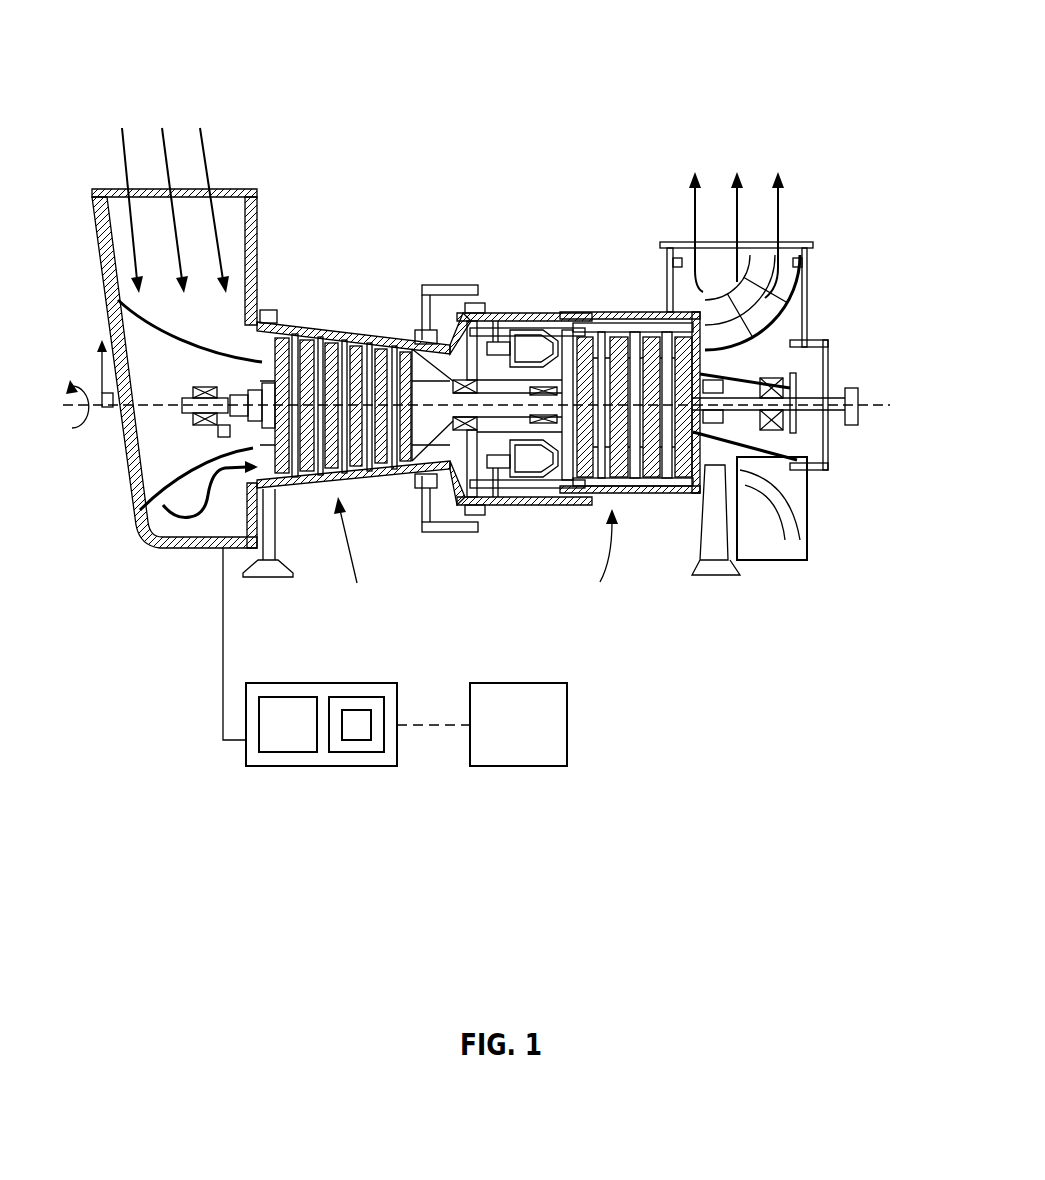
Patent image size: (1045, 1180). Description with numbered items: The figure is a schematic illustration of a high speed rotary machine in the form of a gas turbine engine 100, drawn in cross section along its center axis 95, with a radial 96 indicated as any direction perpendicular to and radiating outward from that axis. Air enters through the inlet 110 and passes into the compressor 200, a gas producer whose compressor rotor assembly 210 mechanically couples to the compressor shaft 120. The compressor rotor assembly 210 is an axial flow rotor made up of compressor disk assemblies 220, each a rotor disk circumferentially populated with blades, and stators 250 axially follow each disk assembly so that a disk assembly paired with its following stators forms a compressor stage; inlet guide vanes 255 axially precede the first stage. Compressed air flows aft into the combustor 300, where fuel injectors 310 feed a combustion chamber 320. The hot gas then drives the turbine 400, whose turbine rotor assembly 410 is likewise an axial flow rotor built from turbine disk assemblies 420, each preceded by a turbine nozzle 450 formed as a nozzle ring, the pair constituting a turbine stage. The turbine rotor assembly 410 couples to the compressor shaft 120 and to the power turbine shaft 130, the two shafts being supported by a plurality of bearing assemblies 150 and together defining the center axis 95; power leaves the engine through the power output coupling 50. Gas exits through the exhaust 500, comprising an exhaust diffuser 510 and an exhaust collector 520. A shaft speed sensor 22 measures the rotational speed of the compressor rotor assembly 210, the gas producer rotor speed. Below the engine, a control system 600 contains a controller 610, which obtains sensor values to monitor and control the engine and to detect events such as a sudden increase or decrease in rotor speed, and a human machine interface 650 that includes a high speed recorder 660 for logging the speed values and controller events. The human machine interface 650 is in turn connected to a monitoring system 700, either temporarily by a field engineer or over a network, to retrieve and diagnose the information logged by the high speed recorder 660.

The gas turbine engine 100 is at (234, 34).
The inlet 110 is at (253, 104).
The compressor 200 is at (453, 104).
The combustor 300 is at (558, 104).
The turbine 400 is at (690, 104).
The exhaust 500 is at (830, 126).
The exhaust diffuser 510 is at (717, 307).
The exhaust collector 520 is at (790, 280).
The power output coupling 50 is at (860, 393).
The power turbine shaft 130 is at (828, 393).
The compressor shaft 120 is at (193, 397).
The bearing assemblies 150 is at (207, 425).
The radial 96 is at (100, 367).
The center axis 95 is at (150, 413).
The shaft speed sensor 22 is at (225, 478).
The inlet guide vanes 255 is at (275, 312).
The compressor stationary vanes 250 is at (345, 333).
The compressor disk assemblies 220 is at (316, 487).
The compressor rotor assembly 210 is at (355, 552).
The fuel injectors 310 is at (485, 286).
The combustion chamber 320 is at (531, 318).
The turbine nozzles 450 is at (645, 314).
The turbine disk assemblies 420 is at (670, 492).
The turbine rotor assembly 410 is at (596, 560).
The control system 600 is at (327, 767).
The controller 610 is at (297, 697).
The human machine interface 650 is at (355, 697).
The high speed recorder 660 is at (355, 740).
The monitoring system 700 is at (520, 683).